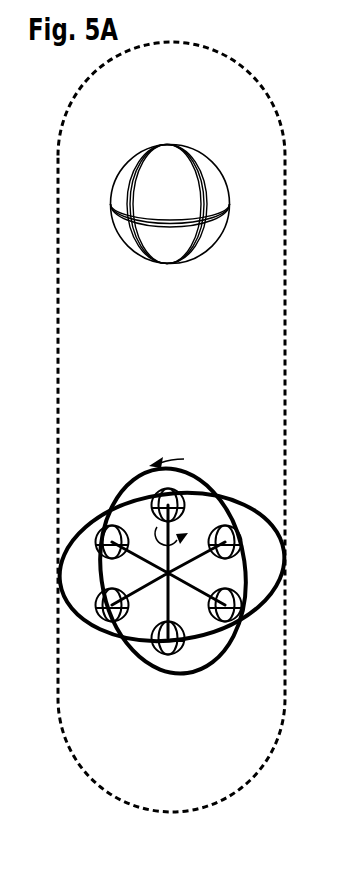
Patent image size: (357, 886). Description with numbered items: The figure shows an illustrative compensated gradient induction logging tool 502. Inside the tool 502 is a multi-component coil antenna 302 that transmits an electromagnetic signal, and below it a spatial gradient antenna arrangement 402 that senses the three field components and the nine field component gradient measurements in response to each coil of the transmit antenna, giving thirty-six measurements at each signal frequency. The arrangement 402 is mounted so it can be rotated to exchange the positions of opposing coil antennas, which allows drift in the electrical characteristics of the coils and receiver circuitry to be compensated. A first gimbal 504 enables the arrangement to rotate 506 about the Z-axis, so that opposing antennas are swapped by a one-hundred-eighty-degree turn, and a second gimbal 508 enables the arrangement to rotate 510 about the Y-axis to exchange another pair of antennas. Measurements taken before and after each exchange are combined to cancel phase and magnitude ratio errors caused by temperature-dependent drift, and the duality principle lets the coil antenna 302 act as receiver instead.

The gradient induction logging tool 502 is at (66, 115).
The multi-component coil antenna 302 is at (228, 177).
The spatial gradient antenna arrangement 402 is at (213, 522).
The first gimbal 504 is at (165, 662).
The rotation about the Z-axis 506 is at (154, 528).
The second gimbal 508 is at (246, 622).
The rotation about the Y-axis 510 is at (174, 449).